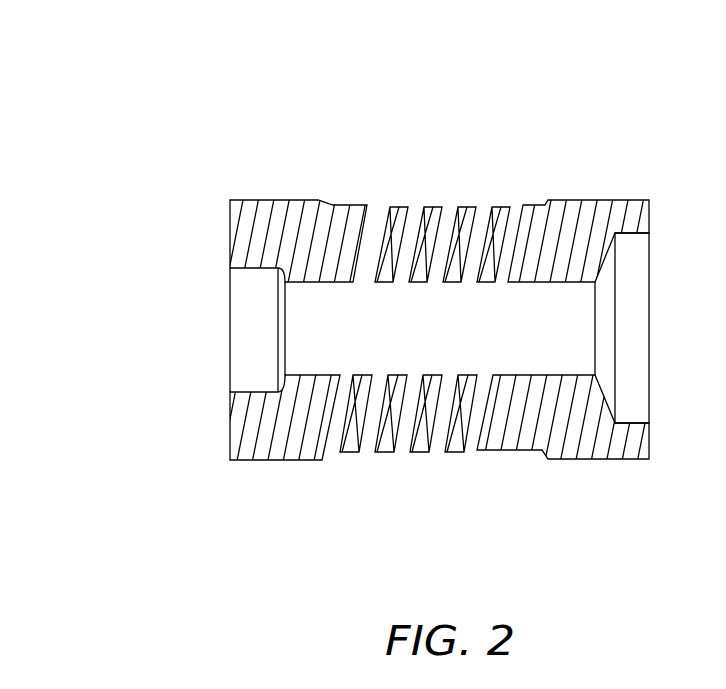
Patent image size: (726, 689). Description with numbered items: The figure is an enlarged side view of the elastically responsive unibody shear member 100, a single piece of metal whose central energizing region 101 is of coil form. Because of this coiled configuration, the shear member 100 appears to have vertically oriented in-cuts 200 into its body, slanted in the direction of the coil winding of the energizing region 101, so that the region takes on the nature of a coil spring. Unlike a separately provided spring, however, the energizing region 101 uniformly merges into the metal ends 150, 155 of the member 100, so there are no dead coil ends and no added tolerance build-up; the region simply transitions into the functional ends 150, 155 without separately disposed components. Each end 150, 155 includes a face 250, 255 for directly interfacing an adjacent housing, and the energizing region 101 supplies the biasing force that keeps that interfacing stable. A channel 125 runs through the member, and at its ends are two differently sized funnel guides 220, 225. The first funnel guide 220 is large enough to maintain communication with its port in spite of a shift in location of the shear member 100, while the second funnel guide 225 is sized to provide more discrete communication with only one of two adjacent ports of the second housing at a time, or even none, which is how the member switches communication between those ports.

The elastically responsive unibody shear member 100 is at (394, 288).
The energizing region 101 is at (533, 190).
The channel 125 is at (442, 340).
The end 150 is at (230, 233).
The end 155 is at (600, 450).
The in-cut 200 is at (332, 450).
The first funnel guide 220 is at (643, 331).
The second funnel guide 225 is at (229, 336).
The face 250 is at (230, 433).
The face 255 is at (651, 214).